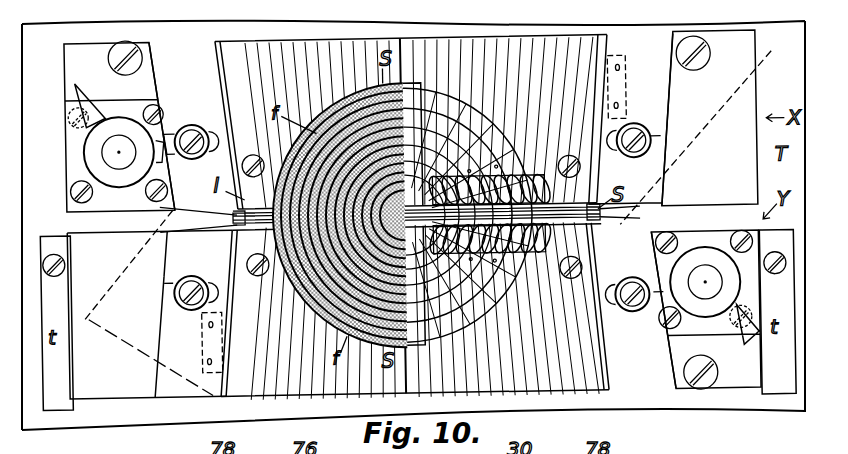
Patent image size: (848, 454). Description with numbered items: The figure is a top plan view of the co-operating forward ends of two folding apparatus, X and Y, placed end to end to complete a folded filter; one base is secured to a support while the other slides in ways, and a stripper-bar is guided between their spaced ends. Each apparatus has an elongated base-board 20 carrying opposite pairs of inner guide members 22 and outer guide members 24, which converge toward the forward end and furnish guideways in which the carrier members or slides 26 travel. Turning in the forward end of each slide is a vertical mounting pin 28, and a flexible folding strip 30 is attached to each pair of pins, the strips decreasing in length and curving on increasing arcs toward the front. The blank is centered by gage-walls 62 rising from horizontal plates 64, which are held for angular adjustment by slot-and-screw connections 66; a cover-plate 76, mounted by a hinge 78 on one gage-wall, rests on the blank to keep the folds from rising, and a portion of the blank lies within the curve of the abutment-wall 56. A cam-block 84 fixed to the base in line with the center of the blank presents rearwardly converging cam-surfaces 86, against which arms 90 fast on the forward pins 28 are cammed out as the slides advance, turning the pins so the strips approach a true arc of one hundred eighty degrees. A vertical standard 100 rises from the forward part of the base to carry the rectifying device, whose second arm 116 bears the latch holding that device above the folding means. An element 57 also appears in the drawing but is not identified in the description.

The base-board 20 is at (82, 66).
The inner guide members 22 is at (441, 44).
The outer guide members 24 is at (250, 47).
The carrier members 26 is at (346, 62).
The mounting pin 28 is at (300, 197).
The folding strip 30 is at (516, 137).
The abutment-wall 56 is at (468, 216).
The pin 57 is at (495, 215).
The gage-walls 62 is at (220, 58).
The horizontal plates 64 is at (162, 82).
The slot-and-screw connections 66 is at (170, 128).
The cover-plate 76 is at (431, 217).
The hinge 78 is at (628, 90).
The cam-block 84 is at (422, 106).
The cam-surfaces 86 is at (424, 96).
The arm 90 is at (288, 170).
The standard 100 is at (85, 147).
The second arm 116 is at (82, 92).